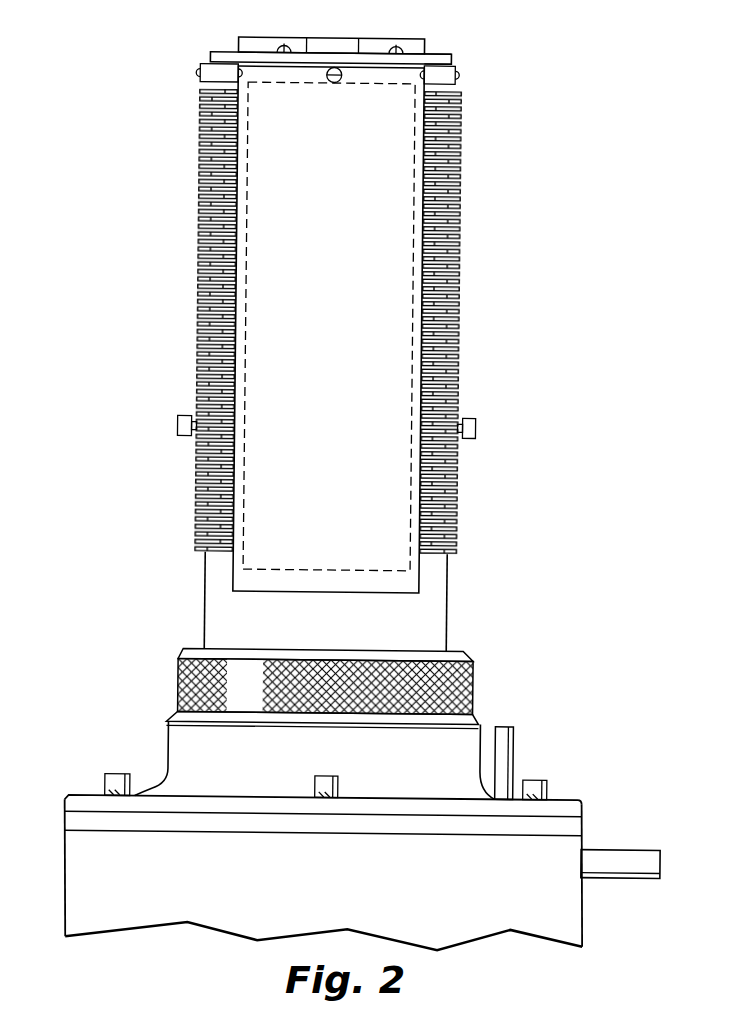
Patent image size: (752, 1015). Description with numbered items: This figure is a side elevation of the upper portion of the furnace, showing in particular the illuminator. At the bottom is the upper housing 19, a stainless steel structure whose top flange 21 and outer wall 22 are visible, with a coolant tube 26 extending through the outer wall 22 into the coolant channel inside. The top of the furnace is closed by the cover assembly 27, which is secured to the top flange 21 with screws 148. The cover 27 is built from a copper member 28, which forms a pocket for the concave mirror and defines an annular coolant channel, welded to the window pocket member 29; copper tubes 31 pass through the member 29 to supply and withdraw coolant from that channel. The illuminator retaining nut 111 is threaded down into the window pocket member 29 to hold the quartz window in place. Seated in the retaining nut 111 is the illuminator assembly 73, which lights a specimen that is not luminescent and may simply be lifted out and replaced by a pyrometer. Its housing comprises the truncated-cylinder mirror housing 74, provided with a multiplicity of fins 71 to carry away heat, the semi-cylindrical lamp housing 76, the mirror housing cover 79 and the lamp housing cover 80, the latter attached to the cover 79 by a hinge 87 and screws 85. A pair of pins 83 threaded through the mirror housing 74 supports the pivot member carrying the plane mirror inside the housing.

The upper housing 19 is at (169, 886).
The top flange 21 is at (75, 825).
The outer wall 22 is at (84, 878).
The coolant tube 26 is at (618, 855).
The cover assembly 27 is at (235, 763).
The member 28 is at (93, 798).
The window pocket member 29 is at (173, 742).
The copper tubes 31 is at (503, 740).
The fins 71 is at (463, 178).
The illuminator assembly 73 is at (461, 339).
The mirror housing 74 is at (449, 73).
The lamp housing 76 is at (371, 73).
The mirror housing cover 79 is at (439, 61).
The lamp housing cover 80 is at (302, 50).
The pins 83 is at (476, 418).
The screws 85 is at (277, 45).
The hinge 87 is at (340, 46).
The illuminator retaining nut 111 is at (462, 658).
The screws 148 is at (533, 778).